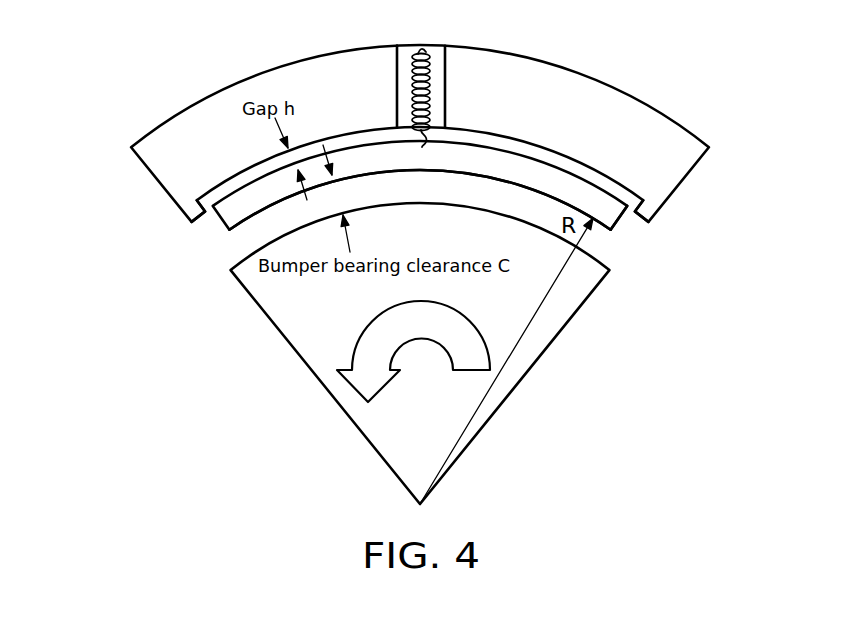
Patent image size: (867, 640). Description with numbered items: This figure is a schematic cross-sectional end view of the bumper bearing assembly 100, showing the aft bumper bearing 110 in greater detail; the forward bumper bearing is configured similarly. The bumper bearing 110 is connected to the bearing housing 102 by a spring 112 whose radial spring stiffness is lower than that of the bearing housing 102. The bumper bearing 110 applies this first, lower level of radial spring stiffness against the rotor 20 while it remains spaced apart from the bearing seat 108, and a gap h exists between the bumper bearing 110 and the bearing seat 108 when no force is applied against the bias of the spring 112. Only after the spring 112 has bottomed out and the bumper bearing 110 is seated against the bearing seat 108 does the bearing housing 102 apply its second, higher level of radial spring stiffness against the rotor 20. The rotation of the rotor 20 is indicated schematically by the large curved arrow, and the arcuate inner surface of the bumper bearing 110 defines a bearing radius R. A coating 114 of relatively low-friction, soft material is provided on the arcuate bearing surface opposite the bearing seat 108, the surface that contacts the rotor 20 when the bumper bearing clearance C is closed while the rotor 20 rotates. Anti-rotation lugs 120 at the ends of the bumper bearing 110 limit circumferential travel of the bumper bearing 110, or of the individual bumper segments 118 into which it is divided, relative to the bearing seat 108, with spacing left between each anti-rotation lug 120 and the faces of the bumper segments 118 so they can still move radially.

The bumper bearing assembly 100 is at (412, 167).
The bearing housing 102 is at (270, 70).
The bearing seat 108 is at (603, 172).
The bumper bearing 110 is at (683, 245).
The bumper segment 118 is at (620, 207).
The spring 112 is at (430, 70).
The coating 114 is at (613, 232).
The anti-rotation lug 120 is at (186, 226).
The rotor 20 is at (513, 387).